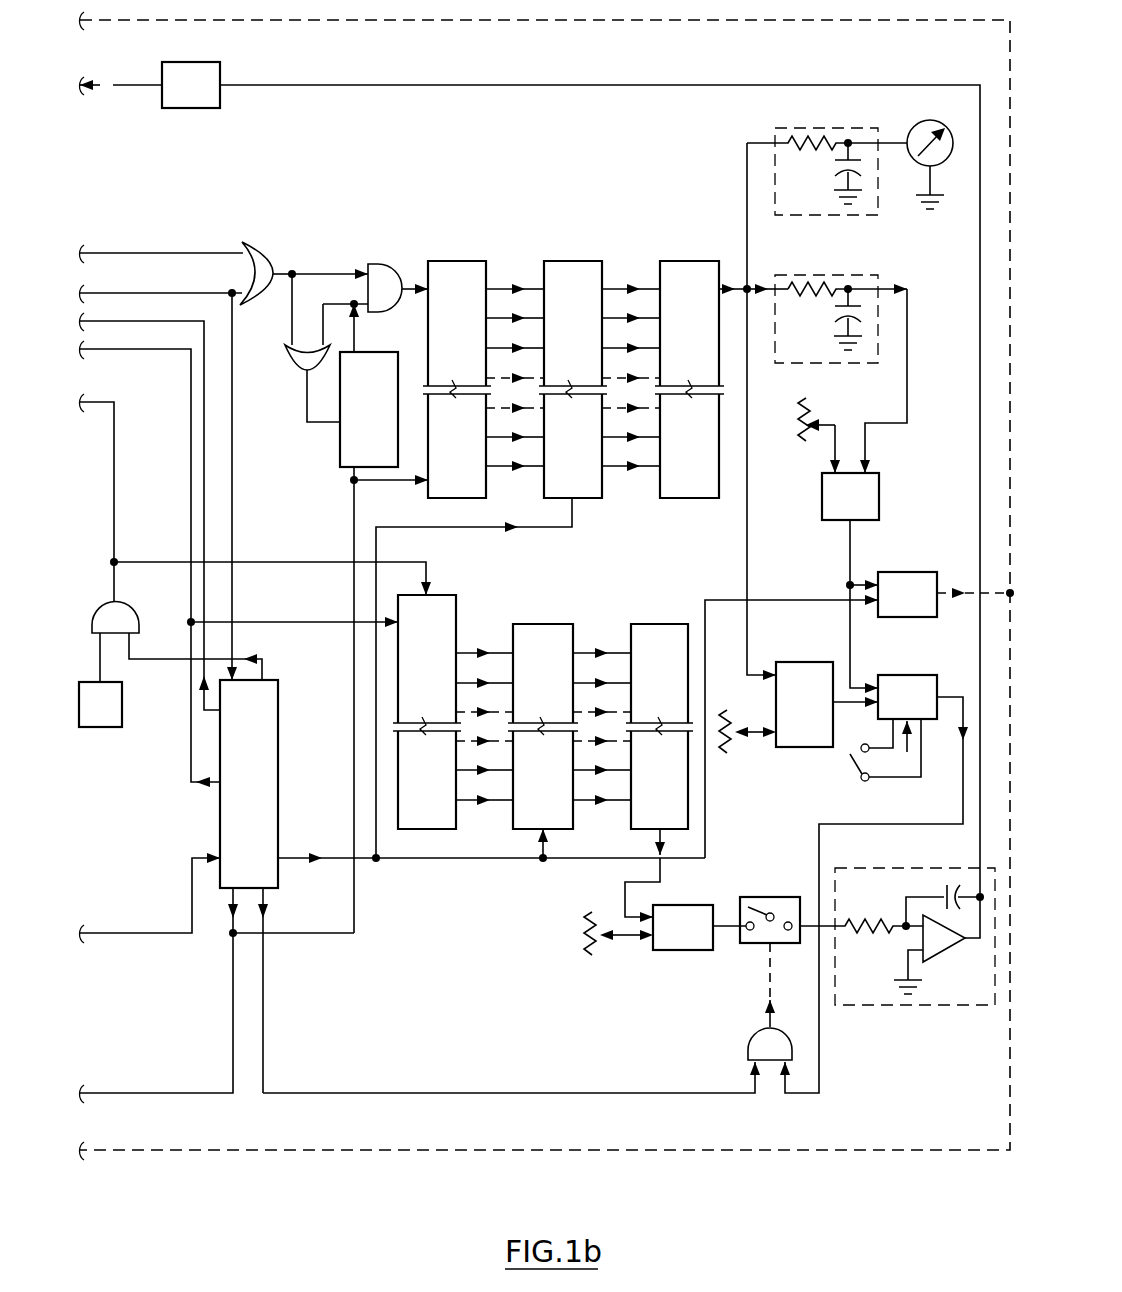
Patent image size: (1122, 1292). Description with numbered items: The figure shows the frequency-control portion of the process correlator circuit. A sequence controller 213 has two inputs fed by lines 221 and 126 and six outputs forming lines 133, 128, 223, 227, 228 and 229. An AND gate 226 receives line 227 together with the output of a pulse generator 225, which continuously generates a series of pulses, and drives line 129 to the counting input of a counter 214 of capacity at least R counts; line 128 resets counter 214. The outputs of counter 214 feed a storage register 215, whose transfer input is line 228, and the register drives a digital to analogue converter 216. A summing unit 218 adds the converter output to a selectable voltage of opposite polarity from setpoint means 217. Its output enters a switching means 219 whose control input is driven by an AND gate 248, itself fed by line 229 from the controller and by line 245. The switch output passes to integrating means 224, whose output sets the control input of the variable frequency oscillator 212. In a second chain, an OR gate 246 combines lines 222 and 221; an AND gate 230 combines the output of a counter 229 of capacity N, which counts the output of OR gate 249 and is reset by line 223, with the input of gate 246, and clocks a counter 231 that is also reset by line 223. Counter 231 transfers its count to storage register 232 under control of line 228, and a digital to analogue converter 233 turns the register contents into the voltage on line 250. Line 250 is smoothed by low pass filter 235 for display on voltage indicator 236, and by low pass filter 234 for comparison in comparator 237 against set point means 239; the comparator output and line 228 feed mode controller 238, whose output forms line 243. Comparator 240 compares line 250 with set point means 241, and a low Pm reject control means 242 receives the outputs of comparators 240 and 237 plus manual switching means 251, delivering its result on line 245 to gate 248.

The line 126 is at (142, 926).
The line 128 is at (142, 348).
The line 129 is at (128, 386).
The line 133 is at (142, 320).
The variable frequency oscillator 212 is at (220, 66).
The sequence controller 213 is at (270, 755).
The counter 214 is at (456, 632).
The storage register 215 is at (532, 627).
The digital to analogue converter 216 is at (635, 626).
The setpoint means 217 is at (588, 960).
The summing unit 218 is at (716, 900).
The switching means 219 is at (790, 896).
The line 221 is at (142, 292).
The line 222 is at (142, 250).
The line 223 is at (375, 482).
The integrating means 224 is at (882, 850).
The generator 225 is at (118, 710).
The AND gate 226 is at (136, 600).
The line 227 is at (130, 650).
The line 228 is at (582, 538).
The counter 229 is at (340, 442).
The AND gate 230 is at (370, 266).
The counter 231 is at (428, 262).
The storage register 232 is at (544, 262).
The counter stage 233 is at (660, 262).
The low-pass filter means 234 is at (856, 274).
The low pass filter means 235 is at (834, 124).
The voltage-indicator means 236 is at (918, 128).
The comparator means 237 is at (874, 496).
The mode controller 238 is at (895, 573).
The set point means 239 is at (790, 440).
The comparator means 240 is at (828, 668).
The set point means 241 is at (728, 758).
The low Pm reject control means 242 is at (928, 680).
The line 243 is at (144, 20).
The line 245 is at (872, 810).
The OR gate 246 is at (262, 240).
The AND gate 248 is at (748, 1056).
The OR gate 249 is at (290, 378).
The line 250 is at (748, 230).
The switching means 251 is at (858, 780).